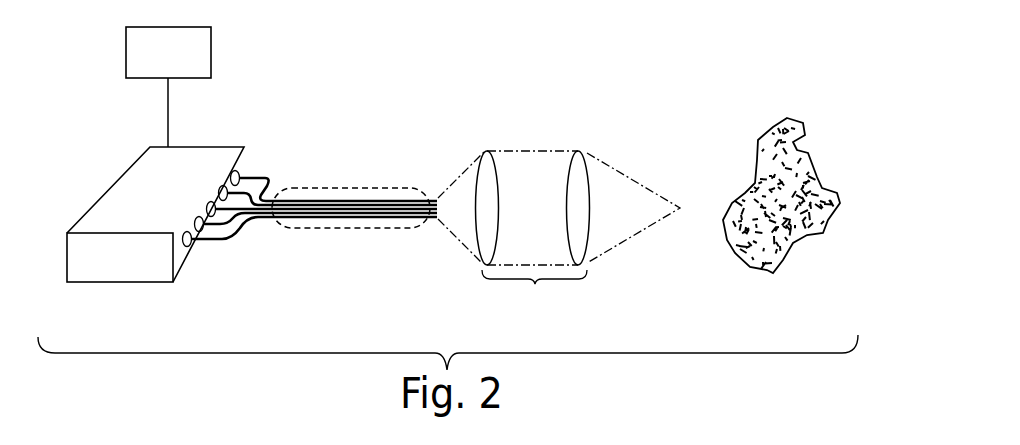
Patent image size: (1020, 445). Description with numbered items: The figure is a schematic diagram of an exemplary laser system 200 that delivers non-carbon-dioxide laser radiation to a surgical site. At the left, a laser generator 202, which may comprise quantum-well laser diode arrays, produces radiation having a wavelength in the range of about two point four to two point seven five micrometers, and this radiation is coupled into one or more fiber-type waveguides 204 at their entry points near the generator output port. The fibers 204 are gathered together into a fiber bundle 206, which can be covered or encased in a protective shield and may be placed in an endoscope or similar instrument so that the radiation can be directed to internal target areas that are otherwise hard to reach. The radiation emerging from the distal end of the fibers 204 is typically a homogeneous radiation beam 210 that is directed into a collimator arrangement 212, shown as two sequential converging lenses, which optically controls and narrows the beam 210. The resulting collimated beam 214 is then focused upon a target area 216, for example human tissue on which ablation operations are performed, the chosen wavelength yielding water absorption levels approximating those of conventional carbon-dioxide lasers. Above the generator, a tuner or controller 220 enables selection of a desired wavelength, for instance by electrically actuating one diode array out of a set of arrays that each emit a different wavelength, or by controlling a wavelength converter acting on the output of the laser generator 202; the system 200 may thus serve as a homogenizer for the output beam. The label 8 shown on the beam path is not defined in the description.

The laser system 200 is at (128, 138).
The laser generator 202 is at (93, 211).
The fiber-type waveguides 204 is at (250, 182).
The fiber bundle 206 is at (350, 217).
The light beam 8 is at (434, 190).
The homogeneous radiation beam 210 is at (478, 254).
The collimator arrangement 212 is at (536, 208).
The collimated beam 214 is at (606, 171).
The target area 216 is at (734, 251).
The tuner or controller 220 is at (211, 40).